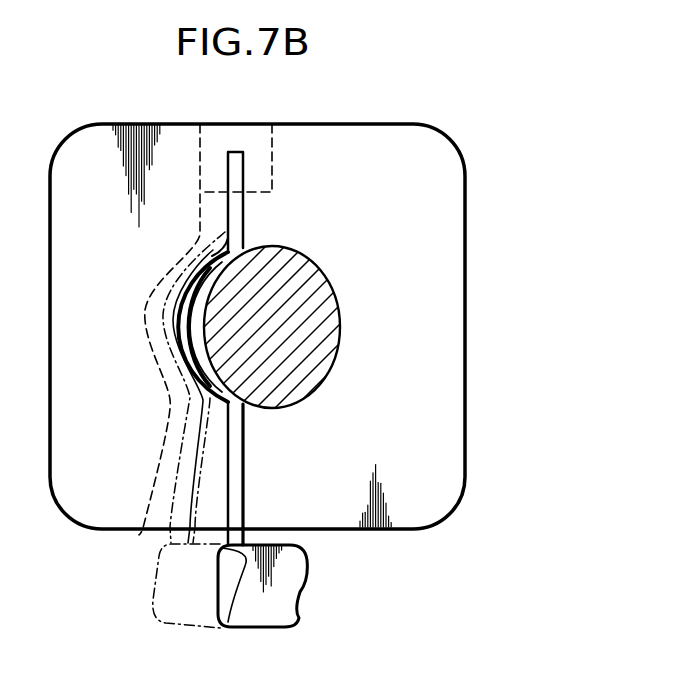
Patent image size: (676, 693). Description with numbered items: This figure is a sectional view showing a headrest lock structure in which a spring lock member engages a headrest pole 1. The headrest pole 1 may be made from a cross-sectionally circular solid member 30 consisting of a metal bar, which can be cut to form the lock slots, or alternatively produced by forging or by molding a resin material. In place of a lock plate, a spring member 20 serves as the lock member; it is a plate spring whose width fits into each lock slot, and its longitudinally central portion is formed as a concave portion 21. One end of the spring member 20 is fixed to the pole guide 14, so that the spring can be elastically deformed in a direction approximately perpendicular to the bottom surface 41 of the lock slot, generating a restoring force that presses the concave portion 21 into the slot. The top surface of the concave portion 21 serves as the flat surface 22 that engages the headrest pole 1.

The headrest pole 1 is at (338, 346).
The pole guide 14 is at (467, 285).
The spring member 20 is at (249, 472).
The concave portion 21 is at (222, 368).
The flat surface 22 is at (200, 353).
The solid member 30 is at (300, 392).
The bottom surface 41 is at (207, 298).